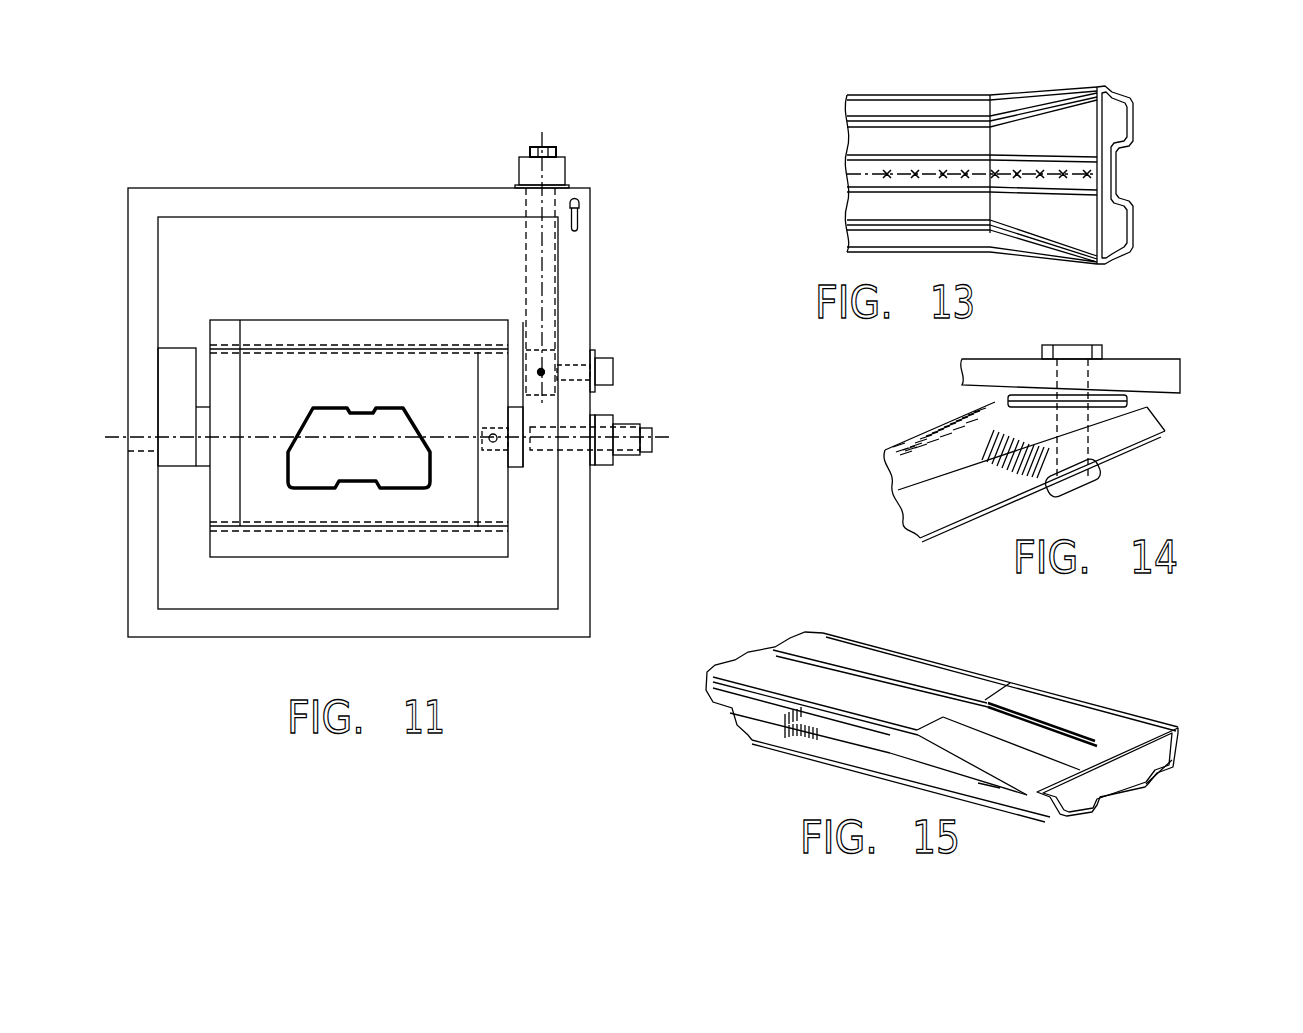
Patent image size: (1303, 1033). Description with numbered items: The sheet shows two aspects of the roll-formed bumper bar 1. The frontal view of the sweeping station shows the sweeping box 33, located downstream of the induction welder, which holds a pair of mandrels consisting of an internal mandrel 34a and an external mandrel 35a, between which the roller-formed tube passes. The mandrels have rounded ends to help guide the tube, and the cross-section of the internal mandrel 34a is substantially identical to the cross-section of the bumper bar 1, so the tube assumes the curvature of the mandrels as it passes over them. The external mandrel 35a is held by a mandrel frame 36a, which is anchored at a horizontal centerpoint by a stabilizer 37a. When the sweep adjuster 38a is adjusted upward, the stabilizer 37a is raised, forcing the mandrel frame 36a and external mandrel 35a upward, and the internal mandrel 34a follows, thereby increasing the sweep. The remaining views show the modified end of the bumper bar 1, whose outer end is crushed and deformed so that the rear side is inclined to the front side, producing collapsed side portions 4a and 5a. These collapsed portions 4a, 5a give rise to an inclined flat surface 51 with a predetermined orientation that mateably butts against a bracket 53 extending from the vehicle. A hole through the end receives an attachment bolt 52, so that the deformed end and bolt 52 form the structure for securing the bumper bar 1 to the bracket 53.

In FIG. 11, the bumper bar 1 is at (307, 415).
In FIG. 13, the bumper bar 1 is at (903, 107).
In FIG. 14, the bumper bar 1 is at (940, 503).
In FIG. 15, the bumper bar 1 is at (903, 668).
In FIG. 11, the sweeping box 33 is at (573, 580).
In FIG. 11, the internal mandrel 34a is at (328, 407).
In FIG. 11, the external mandrel 35a is at (358, 349).
In FIG. 11, the mandrel frame 36a is at (443, 320).
In FIG. 11, the stabilizer 37a is at (652, 428).
In FIG. 11, the sweep adjuster 38a is at (552, 148).
In FIG. 13, the flat surface 51 is at (1057, 127).
In FIG. 14, the flat surface 51 is at (1108, 412).
In FIG. 15, the flat surface 51 is at (1107, 730).
In FIG. 14, the bolt 52 is at (1077, 380).
In FIG. 14, the bracket 53 is at (1183, 382).
In FIG. 15, the collapsed portion 4a is at (1022, 802).
In FIG. 15, the collapsed portion 5a is at (1183, 740).